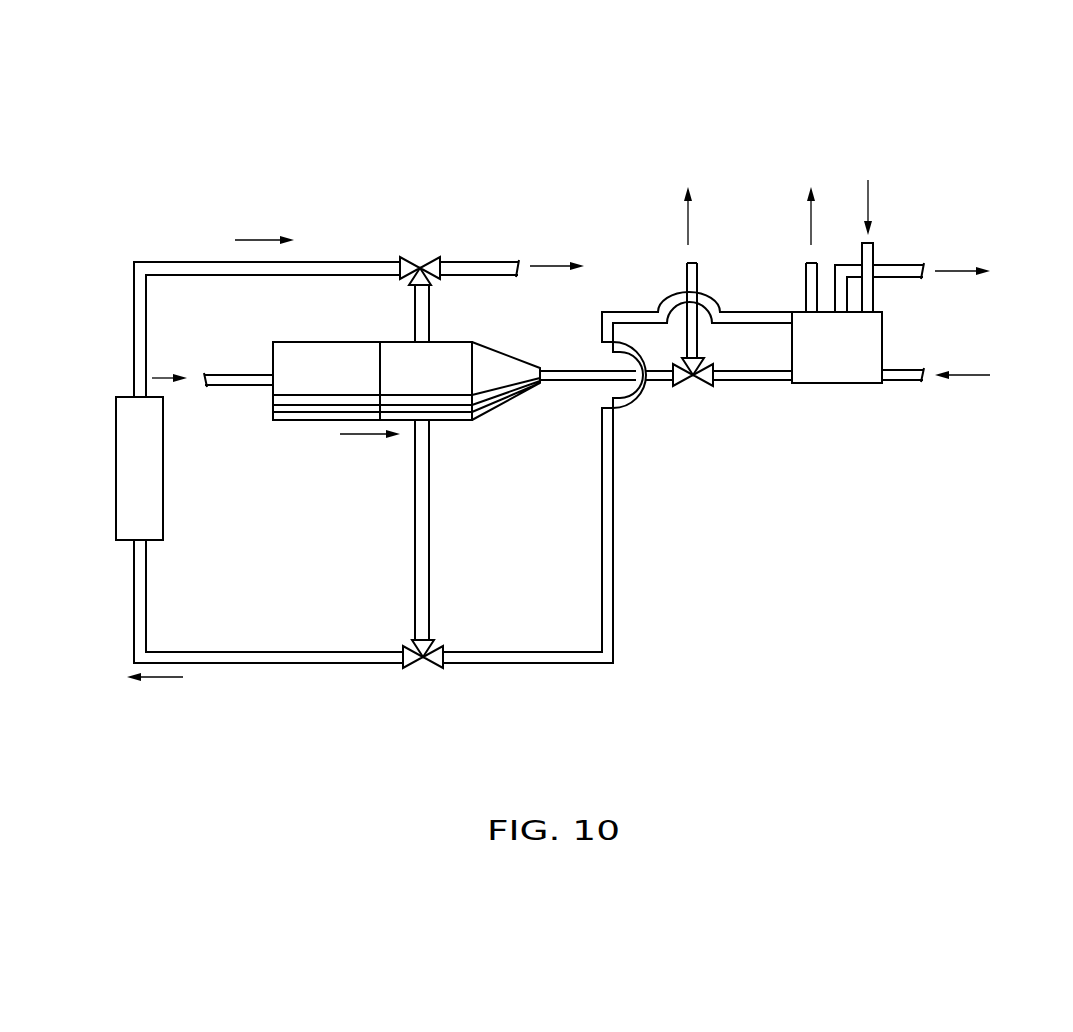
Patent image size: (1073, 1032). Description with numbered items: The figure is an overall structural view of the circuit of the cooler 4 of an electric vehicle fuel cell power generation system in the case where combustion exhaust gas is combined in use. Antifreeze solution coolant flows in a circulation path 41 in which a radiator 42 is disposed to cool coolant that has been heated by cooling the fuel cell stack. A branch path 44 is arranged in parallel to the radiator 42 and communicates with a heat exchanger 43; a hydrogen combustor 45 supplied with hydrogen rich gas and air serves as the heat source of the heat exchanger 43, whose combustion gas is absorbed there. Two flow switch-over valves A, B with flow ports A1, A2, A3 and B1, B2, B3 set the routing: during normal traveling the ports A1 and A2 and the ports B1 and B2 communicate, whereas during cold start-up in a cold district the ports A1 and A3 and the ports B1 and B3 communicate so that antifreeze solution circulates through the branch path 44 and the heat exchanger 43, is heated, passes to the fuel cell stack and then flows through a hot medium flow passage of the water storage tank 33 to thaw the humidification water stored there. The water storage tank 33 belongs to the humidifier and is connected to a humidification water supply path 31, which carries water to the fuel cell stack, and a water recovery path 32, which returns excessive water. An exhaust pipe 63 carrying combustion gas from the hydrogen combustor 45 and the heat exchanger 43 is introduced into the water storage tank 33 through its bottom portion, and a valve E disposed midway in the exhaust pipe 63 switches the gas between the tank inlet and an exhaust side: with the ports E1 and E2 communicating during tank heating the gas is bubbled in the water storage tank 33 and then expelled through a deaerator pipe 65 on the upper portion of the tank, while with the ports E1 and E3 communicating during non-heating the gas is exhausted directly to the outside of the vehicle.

The cooler 4 is at (329, 678).
The humidification water supply path 31 is at (806, 288).
The water recovery path 32 is at (875, 295).
The water storage tank 33 is at (830, 383).
The circulation path 41 is at (148, 596).
The radiator 42 is at (166, 512).
The heat exchanger 43 is at (450, 421).
The branch path 44 is at (431, 578).
The hydrogen combustor 45 is at (275, 421).
The exhaust pipe 63 is at (558, 382).
The deaerator pipe 65 is at (893, 265).
The flow switch-over valve A is at (420, 682).
The flow port A1 is at (442, 667).
The flow port A2 is at (404, 666).
The flow port A3 is at (416, 643).
The flow switch-over valve B is at (417, 254).
The flow port B1 is at (441, 263).
The flow port B2 is at (401, 266).
The flow port B3 is at (428, 285).
The valve E is at (681, 373).
The port E1 is at (677, 384).
The port E2 is at (712, 386).
The port E3 is at (686, 362).